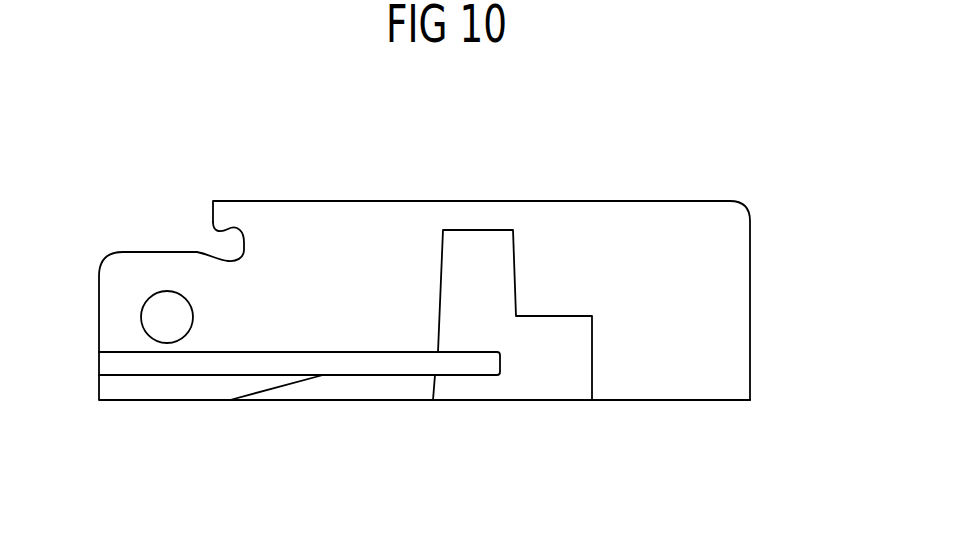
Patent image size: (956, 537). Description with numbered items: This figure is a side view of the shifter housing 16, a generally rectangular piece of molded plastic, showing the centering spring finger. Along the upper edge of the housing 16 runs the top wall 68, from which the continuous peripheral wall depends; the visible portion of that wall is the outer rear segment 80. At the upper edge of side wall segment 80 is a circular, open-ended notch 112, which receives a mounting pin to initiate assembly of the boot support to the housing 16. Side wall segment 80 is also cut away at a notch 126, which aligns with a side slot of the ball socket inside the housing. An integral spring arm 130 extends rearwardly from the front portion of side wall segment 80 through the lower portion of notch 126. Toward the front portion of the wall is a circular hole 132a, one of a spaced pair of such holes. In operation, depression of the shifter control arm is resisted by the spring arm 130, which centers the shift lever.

The shifter housing 16 is at (786, 256).
The top wall 68 is at (693, 200).
The outer rear segment 80 is at (344, 218).
The circular open-ended notch 112 is at (224, 236).
The notch 126 is at (513, 253).
The spring arm 130 is at (385, 365).
The circular hole 132a is at (165, 303).